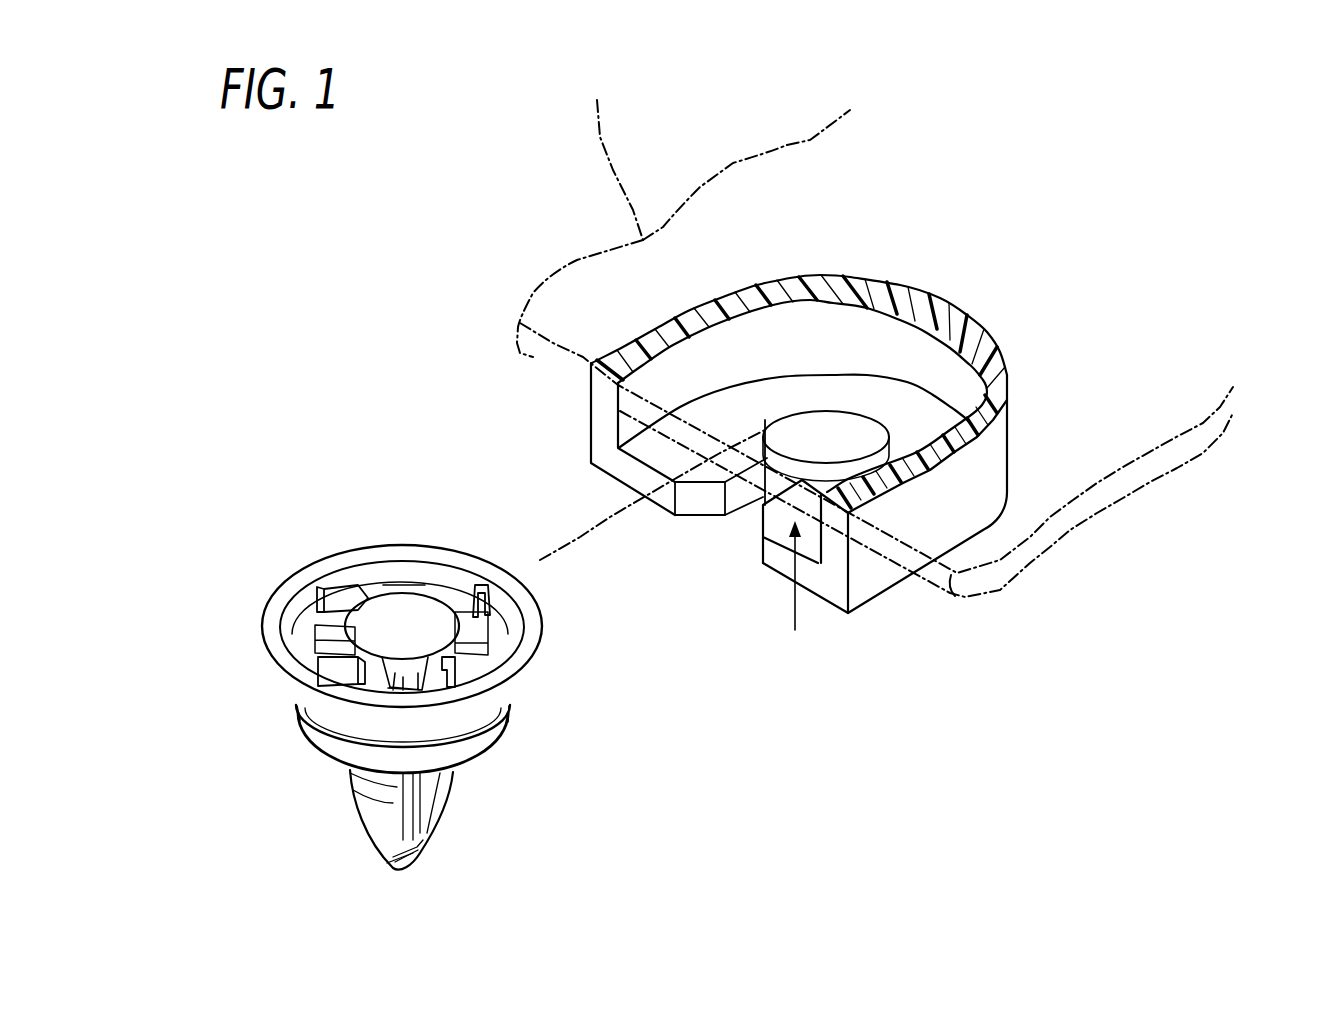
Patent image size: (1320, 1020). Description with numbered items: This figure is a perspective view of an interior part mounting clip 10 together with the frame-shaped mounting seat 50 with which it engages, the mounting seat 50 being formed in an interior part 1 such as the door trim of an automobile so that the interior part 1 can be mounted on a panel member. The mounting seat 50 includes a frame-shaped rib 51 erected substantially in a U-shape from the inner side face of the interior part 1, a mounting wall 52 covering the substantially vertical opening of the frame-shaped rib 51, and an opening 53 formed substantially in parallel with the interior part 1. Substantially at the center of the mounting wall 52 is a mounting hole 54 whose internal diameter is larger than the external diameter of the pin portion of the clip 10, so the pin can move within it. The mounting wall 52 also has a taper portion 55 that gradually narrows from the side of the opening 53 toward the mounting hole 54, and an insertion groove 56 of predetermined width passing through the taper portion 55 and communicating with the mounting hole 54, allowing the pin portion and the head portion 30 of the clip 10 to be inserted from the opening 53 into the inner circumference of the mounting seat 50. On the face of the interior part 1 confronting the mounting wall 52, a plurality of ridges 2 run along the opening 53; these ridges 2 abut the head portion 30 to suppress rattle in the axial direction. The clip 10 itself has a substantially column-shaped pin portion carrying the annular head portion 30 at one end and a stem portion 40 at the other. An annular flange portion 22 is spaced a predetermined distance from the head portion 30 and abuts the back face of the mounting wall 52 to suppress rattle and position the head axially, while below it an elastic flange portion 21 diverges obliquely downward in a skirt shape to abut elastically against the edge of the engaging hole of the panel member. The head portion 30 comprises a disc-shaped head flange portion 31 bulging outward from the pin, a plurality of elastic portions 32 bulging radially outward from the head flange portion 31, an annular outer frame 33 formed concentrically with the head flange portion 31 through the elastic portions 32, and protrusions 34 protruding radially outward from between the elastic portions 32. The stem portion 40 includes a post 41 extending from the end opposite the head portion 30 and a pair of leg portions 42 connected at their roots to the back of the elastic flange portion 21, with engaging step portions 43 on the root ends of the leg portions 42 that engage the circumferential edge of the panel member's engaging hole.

The interior part 1 is at (683, 212).
The ridges 2 is at (620, 442).
The interior part mounting clip 10 is at (370, 451).
The elastic flange portion 21 is at (478, 763).
The annular flange portion 22 is at (503, 742).
The head portion 30 is at (405, 610).
The head flange portion 31 is at (428, 595).
The elastic portions 32 is at (498, 612).
The annular outer frame 33 is at (265, 617).
The protrusions 34 is at (407, 583).
The stem portion 40 is at (387, 845).
The post 41 is at (420, 850).
The leg portions 42 is at (367, 840).
The engaging step portions 43 is at (380, 787).
The mounting seat 50 is at (825, 519).
The frame-shaped rib 51 is at (845, 580).
The mounting wall 52 is at (820, 580).
The opening 53 is at (795, 630).
The mounting hole 54 is at (847, 430).
The taper portion 55 is at (693, 505).
The insertion groove 56 is at (740, 497).